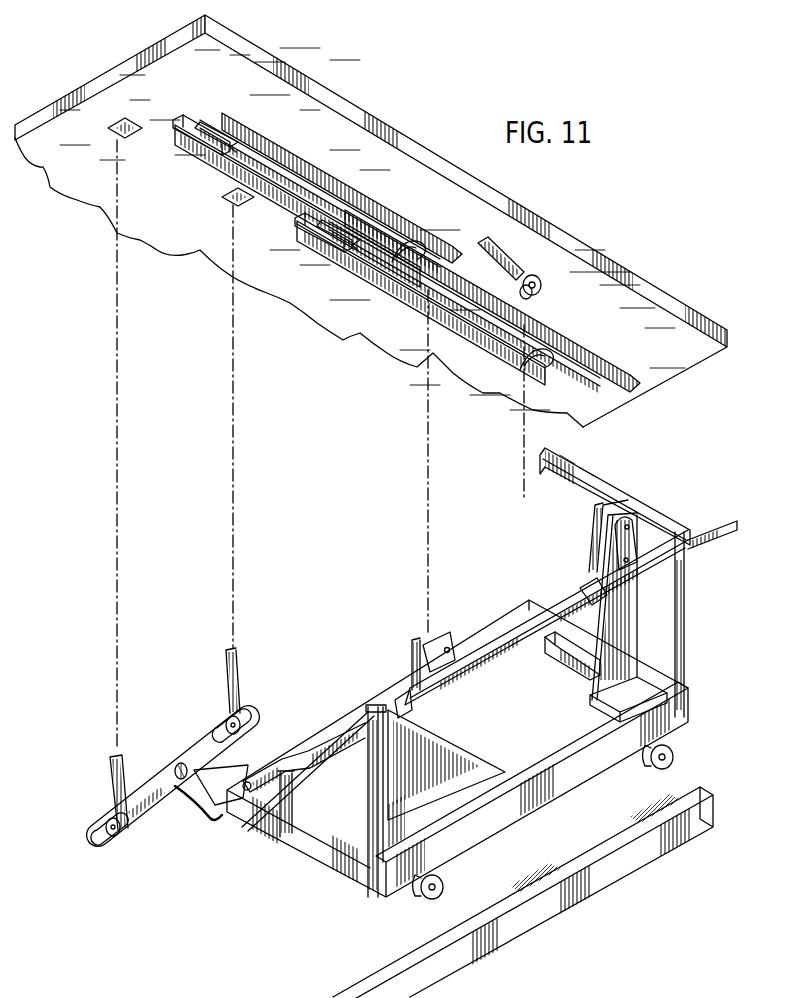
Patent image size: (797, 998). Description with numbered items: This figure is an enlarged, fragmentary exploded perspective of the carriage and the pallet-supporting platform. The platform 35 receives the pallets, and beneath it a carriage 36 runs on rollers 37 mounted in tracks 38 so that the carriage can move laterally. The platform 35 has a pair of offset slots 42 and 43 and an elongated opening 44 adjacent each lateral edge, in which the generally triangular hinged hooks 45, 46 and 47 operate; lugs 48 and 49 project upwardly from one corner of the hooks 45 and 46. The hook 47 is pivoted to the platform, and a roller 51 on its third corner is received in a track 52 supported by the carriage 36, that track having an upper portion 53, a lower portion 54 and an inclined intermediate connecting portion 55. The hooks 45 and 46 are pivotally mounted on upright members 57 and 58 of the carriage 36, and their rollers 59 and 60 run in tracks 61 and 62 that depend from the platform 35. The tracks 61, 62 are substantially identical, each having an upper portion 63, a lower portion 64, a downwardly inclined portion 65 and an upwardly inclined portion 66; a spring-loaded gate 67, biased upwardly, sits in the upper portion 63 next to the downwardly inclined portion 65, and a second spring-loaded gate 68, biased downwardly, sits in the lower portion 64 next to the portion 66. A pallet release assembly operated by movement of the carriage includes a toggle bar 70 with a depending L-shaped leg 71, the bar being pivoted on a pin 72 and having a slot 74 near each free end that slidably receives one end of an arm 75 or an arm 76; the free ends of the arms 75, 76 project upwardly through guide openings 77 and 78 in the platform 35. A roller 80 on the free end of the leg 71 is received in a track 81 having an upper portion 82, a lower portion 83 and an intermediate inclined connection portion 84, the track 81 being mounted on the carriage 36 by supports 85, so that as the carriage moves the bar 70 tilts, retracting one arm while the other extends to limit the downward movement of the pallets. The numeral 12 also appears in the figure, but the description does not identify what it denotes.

The table apparatus 12 is at (412, 622).
The platform 35 is at (320, 112).
The carriage 36 is at (555, 800).
The rollers 37 is at (675, 757).
The tracks 38 is at (620, 872).
The slot 42 is at (415, 231).
The slot 43 is at (570, 345).
The elongated opening 44 is at (505, 262).
The hook 45 is at (420, 668).
The hook 46 is at (612, 550).
The hook 47 is at (521, 255).
The lug 48 is at (420, 638).
The lug 49 is at (598, 518).
The roller 51 is at (541, 287).
The track 52 is at (720, 528).
The upper portion 53 is at (500, 630).
The lower portion 54 is at (726, 542).
The inclined intermediate connecting portion 55 is at (594, 622).
The upright member 57 is at (472, 718).
The upright member 58 is at (622, 632).
The roller 59 is at (396, 698).
The roller 60 is at (588, 592).
The track 61 is at (385, 244).
The track 62 is at (467, 302).
The upper portion 63 is at (330, 182).
The lower portion 64 is at (232, 166).
The downwardly inclined portion 65 is at (400, 240).
The upwardly inclined portion 66 is at (215, 135).
The spring loaded gate 67 is at (413, 252).
The second spring loaded gate 68 is at (195, 150).
The toggle bar 70 is at (173, 790).
The L-shaped leg 71 is at (212, 818).
The pin 72 is at (180, 762).
The slot 74 is at (127, 837).
The arm 75 is at (110, 780).
The arm 76 is at (238, 672).
The guide opening 77 is at (115, 135).
The guide opening 78 is at (226, 205).
The roller 80 is at (291, 797).
The track 81 is at (302, 779).
The upper portion 82 is at (260, 765).
The lower portion 83 is at (335, 752).
The intermediate inclined connection portion 84 is at (296, 750).
The supports 85 is at (248, 800).